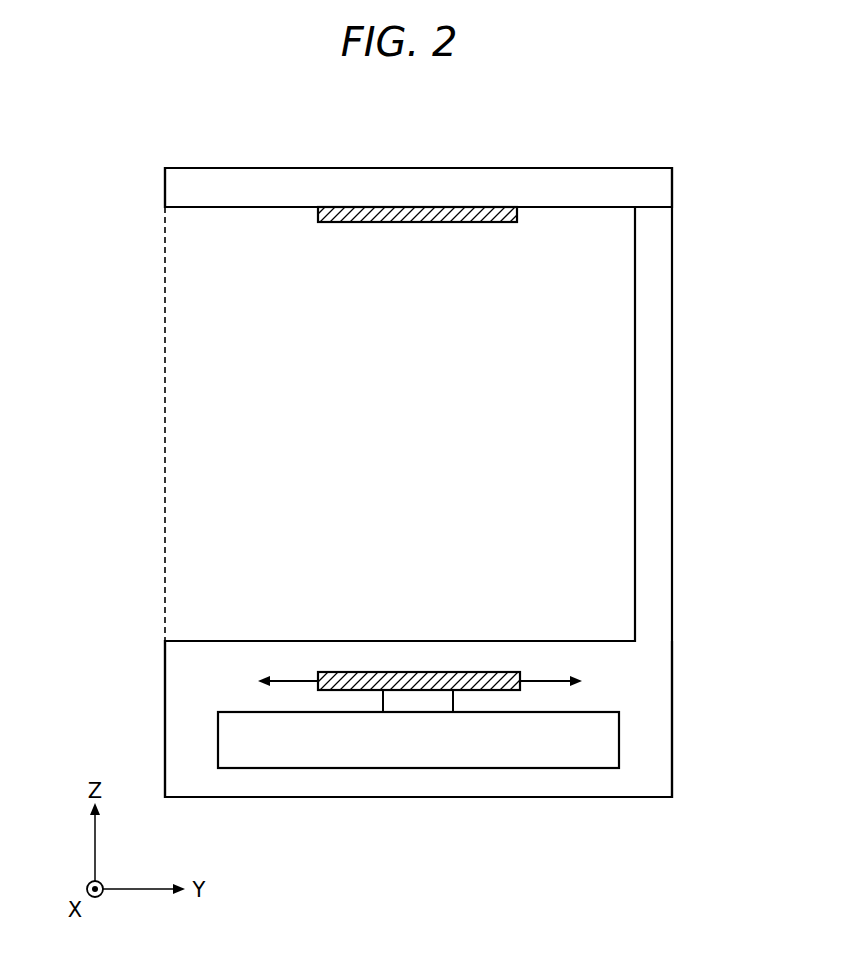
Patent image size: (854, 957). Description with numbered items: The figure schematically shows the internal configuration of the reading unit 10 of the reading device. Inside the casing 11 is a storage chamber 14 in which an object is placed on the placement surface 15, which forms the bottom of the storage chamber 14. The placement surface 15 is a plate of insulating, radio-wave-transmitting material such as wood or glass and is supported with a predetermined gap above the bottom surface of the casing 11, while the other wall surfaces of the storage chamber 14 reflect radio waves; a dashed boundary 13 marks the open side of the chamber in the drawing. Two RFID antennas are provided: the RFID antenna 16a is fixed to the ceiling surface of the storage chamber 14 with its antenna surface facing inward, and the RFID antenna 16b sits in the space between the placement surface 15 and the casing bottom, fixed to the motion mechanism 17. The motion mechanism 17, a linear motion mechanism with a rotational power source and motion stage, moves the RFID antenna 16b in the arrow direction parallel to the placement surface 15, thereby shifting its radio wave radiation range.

The reading unit 10 is at (706, 150).
The casing 11 is at (582, 168).
The opening / boundary 13 is at (163, 225).
The storage chamber 14 is at (252, 422).
The placement surface 15 is at (550, 641).
The RFID antenna 16a is at (345, 207).
The RFID antenna 16b is at (345, 672).
The motion mechanism 17 is at (602, 712).